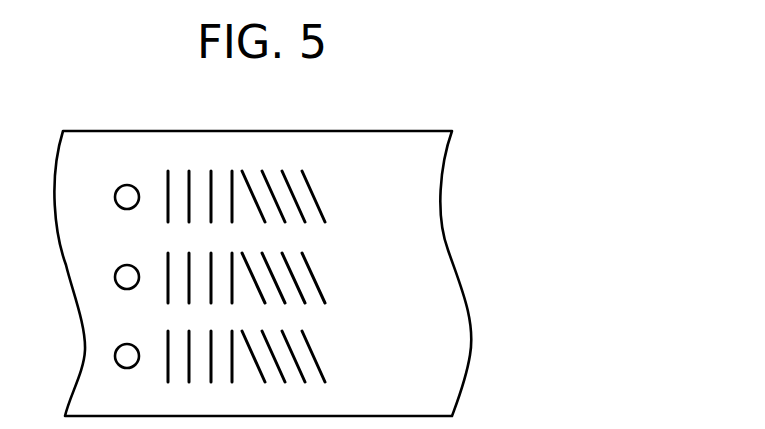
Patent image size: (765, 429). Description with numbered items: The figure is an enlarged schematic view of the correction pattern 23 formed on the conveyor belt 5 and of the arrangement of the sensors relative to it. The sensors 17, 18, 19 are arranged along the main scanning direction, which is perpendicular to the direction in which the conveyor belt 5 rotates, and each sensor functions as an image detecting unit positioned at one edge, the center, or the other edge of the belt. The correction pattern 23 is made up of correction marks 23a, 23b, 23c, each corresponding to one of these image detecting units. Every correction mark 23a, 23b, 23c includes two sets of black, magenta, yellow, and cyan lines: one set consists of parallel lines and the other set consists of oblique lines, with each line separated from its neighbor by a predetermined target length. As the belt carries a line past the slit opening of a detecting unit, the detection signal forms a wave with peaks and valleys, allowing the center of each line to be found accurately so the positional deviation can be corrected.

The conveyor belt 5 is at (383, 131).
The correction pattern 23 is at (291, 237).
The correction mark 23a is at (336, 350).
The correction mark 23b is at (336, 273).
The correction mark 23c is at (336, 197).
The sensor 17 is at (118, 348).
The sensor 18 is at (118, 268).
The sensor 19 is at (118, 188).